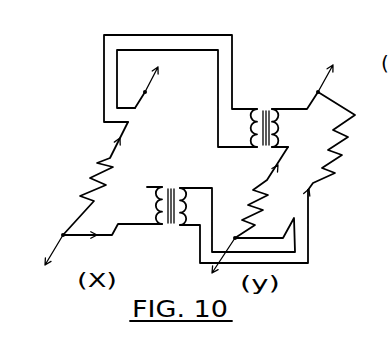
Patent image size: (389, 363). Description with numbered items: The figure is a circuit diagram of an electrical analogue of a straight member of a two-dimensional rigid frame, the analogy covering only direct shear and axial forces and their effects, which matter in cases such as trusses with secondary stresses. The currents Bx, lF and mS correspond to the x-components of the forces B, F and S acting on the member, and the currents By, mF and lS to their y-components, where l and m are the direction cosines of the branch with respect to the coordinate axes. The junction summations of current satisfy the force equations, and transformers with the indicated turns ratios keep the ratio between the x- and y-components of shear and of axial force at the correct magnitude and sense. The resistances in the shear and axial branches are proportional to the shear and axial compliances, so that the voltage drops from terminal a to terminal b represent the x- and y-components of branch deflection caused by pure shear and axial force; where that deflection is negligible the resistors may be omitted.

The current lF is at (95, 178).
The current mF is at (261, 192).
The current lS is at (329, 148).
The current mS is at (109, 242).
The terminal a is at (141, 229).
The terminal b is at (223, 88).
The current Bx is at (112, 181).
The current By is at (269, 167).